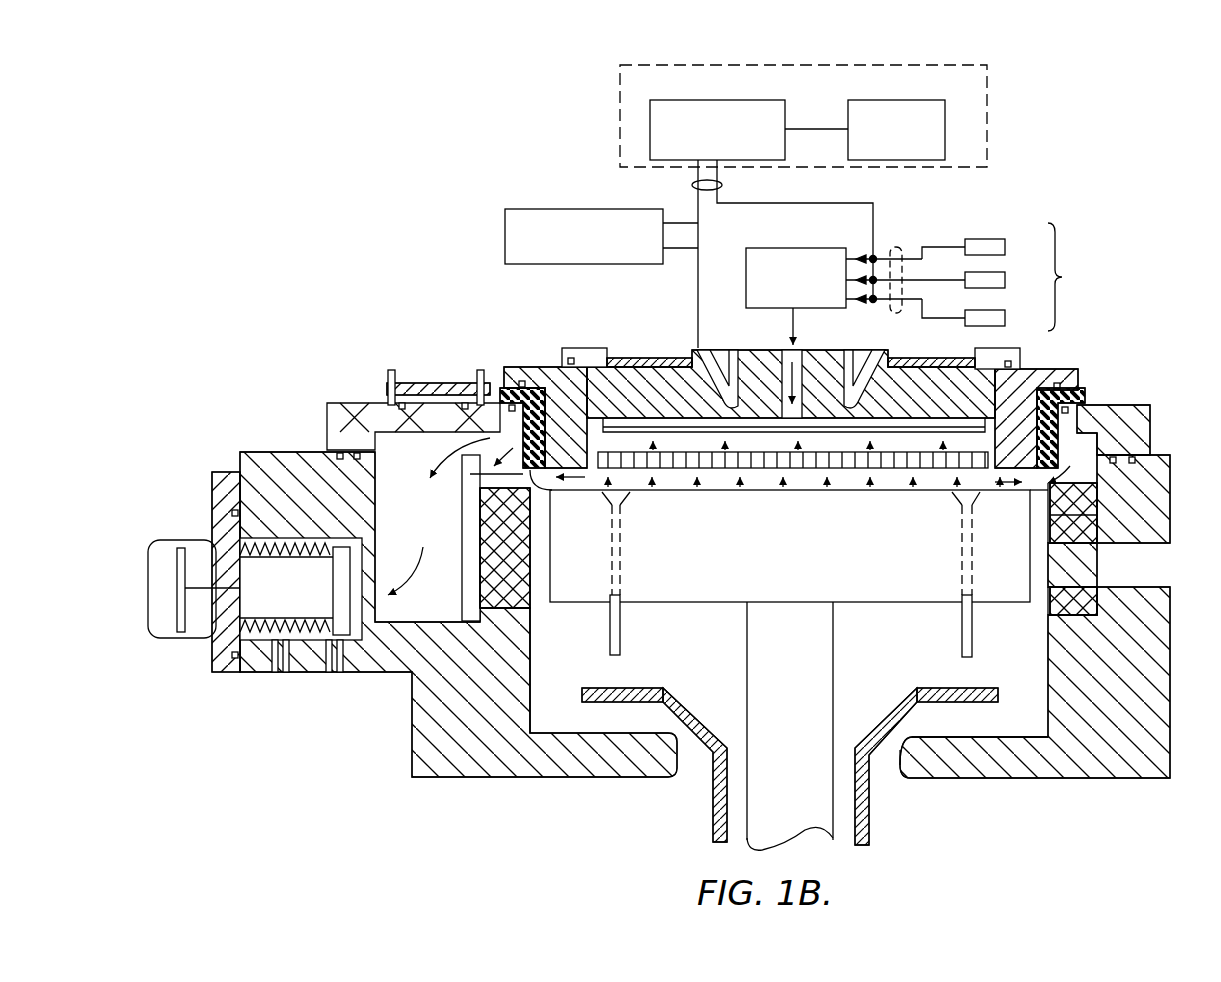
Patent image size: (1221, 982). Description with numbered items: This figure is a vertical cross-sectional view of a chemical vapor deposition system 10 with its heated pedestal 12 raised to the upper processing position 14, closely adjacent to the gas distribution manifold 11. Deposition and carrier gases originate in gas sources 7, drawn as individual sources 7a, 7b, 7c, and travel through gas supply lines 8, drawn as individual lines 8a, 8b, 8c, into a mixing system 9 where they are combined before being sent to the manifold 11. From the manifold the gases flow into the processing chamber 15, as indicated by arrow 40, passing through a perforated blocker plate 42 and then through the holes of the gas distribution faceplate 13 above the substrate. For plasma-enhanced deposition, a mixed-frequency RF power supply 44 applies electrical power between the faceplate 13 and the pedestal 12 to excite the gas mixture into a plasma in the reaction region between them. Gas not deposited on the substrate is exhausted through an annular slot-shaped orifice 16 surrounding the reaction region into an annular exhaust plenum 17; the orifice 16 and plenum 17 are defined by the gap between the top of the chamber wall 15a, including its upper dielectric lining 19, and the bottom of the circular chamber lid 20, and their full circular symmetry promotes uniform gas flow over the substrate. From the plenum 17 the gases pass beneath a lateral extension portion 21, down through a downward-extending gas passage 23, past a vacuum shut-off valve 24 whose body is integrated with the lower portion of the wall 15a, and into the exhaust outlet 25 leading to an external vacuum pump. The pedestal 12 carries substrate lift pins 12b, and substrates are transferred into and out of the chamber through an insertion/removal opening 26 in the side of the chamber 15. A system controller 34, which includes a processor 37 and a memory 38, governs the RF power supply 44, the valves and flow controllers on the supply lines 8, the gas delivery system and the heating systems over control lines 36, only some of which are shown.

The gas sources 7 is at (1062, 277).
The first gas source 7a is at (1005, 247).
The second gas source 7b is at (1005, 280).
The third gas source 7c is at (1005, 318).
The gas supply lines 8 is at (893, 247).
The first gas supply line 8a is at (952, 247).
The second gas supply line 8b is at (952, 280).
The third gas supply line 8c is at (953, 318).
The mixing system 9 is at (818, 248).
The CVD system 10 is at (310, 800).
The gas distribution manifold 11 is at (719, 347).
The heated pedestal 12 is at (770, 575).
The substrate lift pins 12b is at (623, 566).
The gas flow arrows 13 is at (898, 490).
The processing position 14 is at (712, 490).
The processing chamber 15 is at (785, 478).
The chamber wall 15a is at (1052, 772).
The slot-shaped orifice 16 is at (550, 492).
The annular exhaust plenum 17 is at (507, 447).
The upper dielectric lining 19 is at (537, 626).
The circular chamber lid 20 is at (380, 412).
The lateral extension portion 21 is at (388, 445).
The downward-extending gas passage 23 is at (407, 531).
The vacuum shut-off valve 24 is at (172, 640).
The exhaust outlet 25 is at (283, 673).
The insertion/removal opening 26 is at (1156, 573).
The system controller 34 is at (988, 99).
The control lines 36 is at (722, 185).
The processor 37 is at (785, 101).
The memory 38 is at (937, 101).
The arrow 40 is at (800, 362).
The perforated blocker plate 42 is at (958, 430).
The RF power supply 44 is at (558, 208).